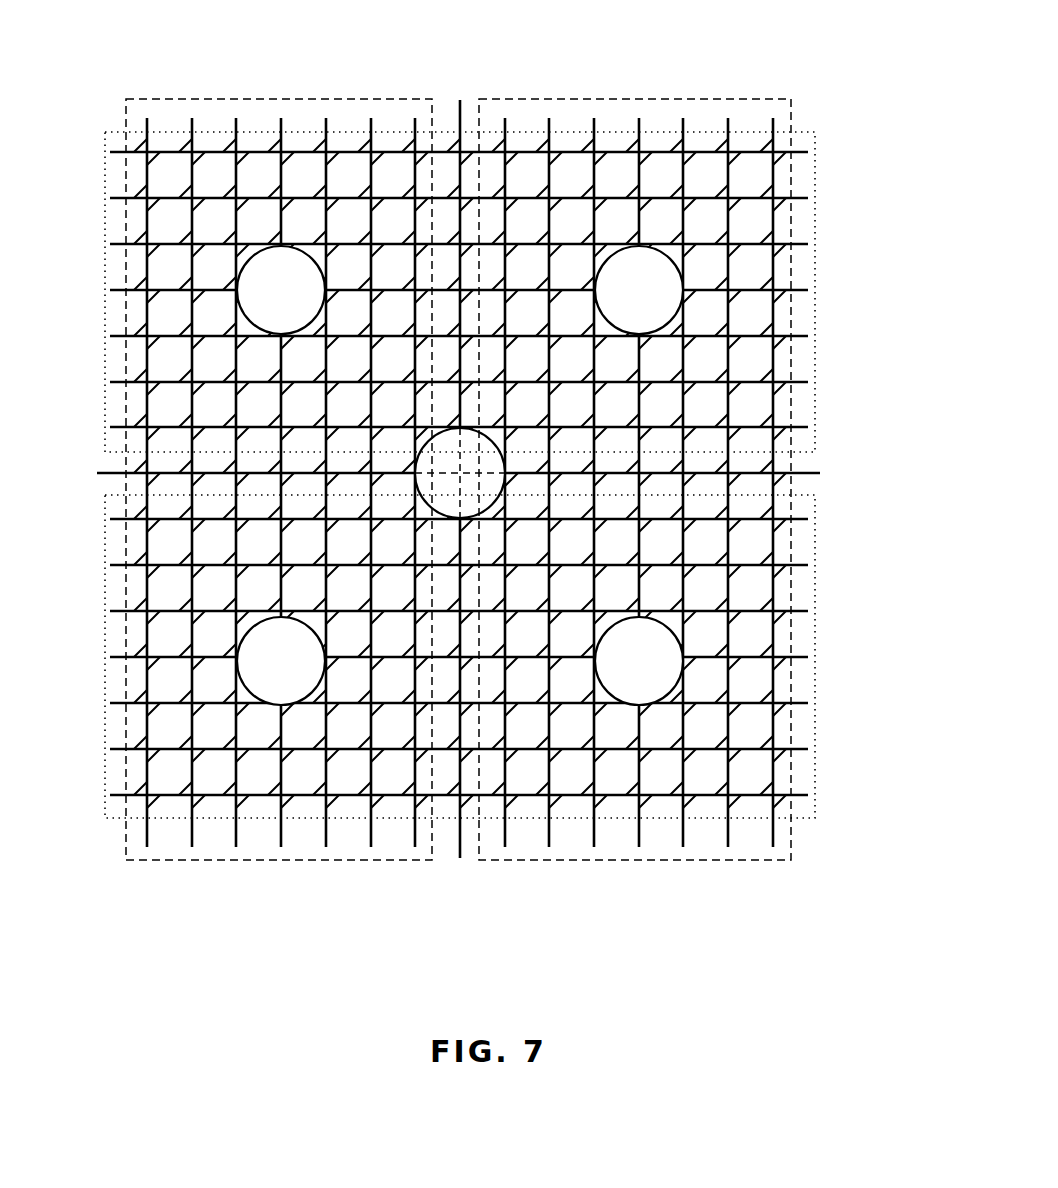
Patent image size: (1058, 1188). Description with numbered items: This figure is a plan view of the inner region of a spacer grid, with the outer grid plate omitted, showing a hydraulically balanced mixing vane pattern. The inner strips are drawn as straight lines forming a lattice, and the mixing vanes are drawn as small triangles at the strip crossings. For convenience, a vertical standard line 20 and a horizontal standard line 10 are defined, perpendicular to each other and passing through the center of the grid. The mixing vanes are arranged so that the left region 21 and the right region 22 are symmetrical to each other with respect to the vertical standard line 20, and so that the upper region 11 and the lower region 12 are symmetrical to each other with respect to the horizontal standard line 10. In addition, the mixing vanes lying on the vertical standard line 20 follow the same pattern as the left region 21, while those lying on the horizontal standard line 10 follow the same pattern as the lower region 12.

The horizontal standard line 10 is at (820, 470).
The upper region 11 is at (818, 222).
The lower region 12 is at (818, 590).
The vertical standard line 20 is at (457, 855).
The left region 21 is at (311, 861).
The right region 22 is at (643, 862).